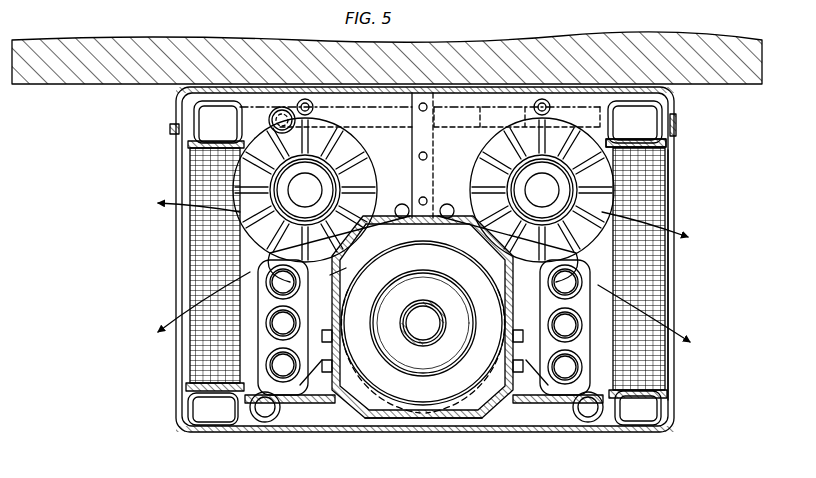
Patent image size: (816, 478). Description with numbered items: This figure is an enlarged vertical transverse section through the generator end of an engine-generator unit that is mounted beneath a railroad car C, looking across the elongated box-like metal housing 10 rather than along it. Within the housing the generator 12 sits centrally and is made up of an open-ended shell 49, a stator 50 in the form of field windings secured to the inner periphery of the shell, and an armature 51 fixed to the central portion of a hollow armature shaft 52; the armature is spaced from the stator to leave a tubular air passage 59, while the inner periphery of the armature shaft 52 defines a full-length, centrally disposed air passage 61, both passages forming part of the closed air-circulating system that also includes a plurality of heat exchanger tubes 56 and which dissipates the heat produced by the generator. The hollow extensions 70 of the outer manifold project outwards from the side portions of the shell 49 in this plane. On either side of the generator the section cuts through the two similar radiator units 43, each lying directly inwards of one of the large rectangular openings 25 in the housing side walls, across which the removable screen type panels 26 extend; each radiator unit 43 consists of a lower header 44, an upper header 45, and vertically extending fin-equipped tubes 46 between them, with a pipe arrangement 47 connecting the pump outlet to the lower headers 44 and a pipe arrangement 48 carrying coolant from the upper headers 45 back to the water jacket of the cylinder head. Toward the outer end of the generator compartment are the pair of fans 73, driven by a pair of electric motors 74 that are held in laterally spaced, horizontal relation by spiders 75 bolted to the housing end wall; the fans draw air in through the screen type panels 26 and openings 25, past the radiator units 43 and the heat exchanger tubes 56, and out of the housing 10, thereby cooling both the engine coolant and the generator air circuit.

The railroad car C is at (128, 52).
The housing 10 is at (680, 418).
The generator 12 is at (428, 216).
The openings 25 is at (666, 144).
The screen type panels 26 is at (672, 183).
The radiator units 43 is at (192, 262).
The lower headers 44 is at (205, 424).
The upper headers 45 is at (178, 128).
The tubes 46 is at (250, 272).
The pipe arrangement 47 is at (265, 423).
The pipe arrangement 48 is at (284, 106).
The shell 49 is at (398, 426).
The stator 50 is at (423, 317).
The armature 51 is at (423, 323).
The hollow armature shaft 52 is at (420, 343).
The heat exchanger tubes 56 is at (424, 327).
The air passage 59 is at (400, 288).
The air passage 61 is at (432, 330).
The hollow extensions 70 is at (424, 346).
The fans 73 is at (372, 173).
The electric motors 74 is at (362, 197).
The spiders 75 is at (315, 138).